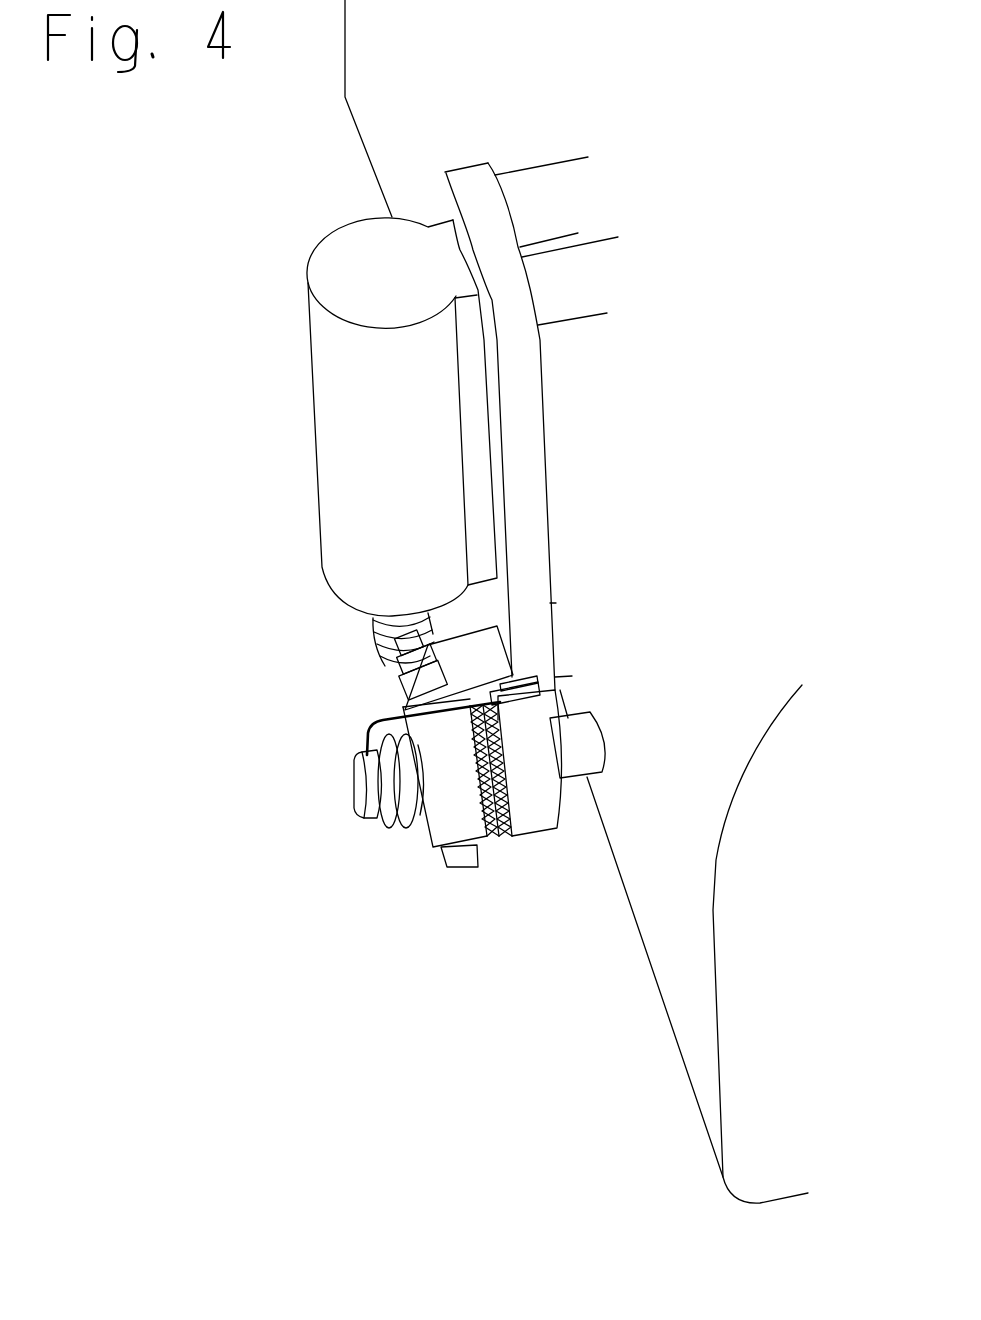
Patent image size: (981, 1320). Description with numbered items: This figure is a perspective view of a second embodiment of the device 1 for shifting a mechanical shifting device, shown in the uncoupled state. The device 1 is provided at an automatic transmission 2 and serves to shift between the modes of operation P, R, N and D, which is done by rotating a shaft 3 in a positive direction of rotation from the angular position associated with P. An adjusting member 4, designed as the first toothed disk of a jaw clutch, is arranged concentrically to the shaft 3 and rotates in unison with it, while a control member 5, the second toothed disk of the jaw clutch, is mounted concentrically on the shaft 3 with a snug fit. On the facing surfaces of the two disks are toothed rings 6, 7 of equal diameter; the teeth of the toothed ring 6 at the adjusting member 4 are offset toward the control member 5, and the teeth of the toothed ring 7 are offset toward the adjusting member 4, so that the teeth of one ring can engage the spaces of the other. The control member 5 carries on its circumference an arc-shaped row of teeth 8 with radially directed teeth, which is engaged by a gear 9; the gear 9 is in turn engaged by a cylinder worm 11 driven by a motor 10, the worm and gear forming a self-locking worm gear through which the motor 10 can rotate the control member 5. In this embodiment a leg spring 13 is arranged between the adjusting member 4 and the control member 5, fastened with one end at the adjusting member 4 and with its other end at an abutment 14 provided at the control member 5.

The device for shifting a mechanical shifting device 1 is at (197, 281).
The automatic transmission 2 is at (647, 290).
The shaft 3 is at (587, 755).
The adjusting member 4 is at (538, 808).
The control member 5 is at (435, 837).
The toothed ring 6 is at (508, 833).
The toothed ring 7 is at (493, 840).
The row of teeth 8 is at (398, 705).
The gear 9 is at (408, 662).
The motor 10 is at (365, 420).
The cylinder worm 11 is at (435, 637).
The leg spring 13 is at (387, 822).
The abutment 14 is at (412, 827).